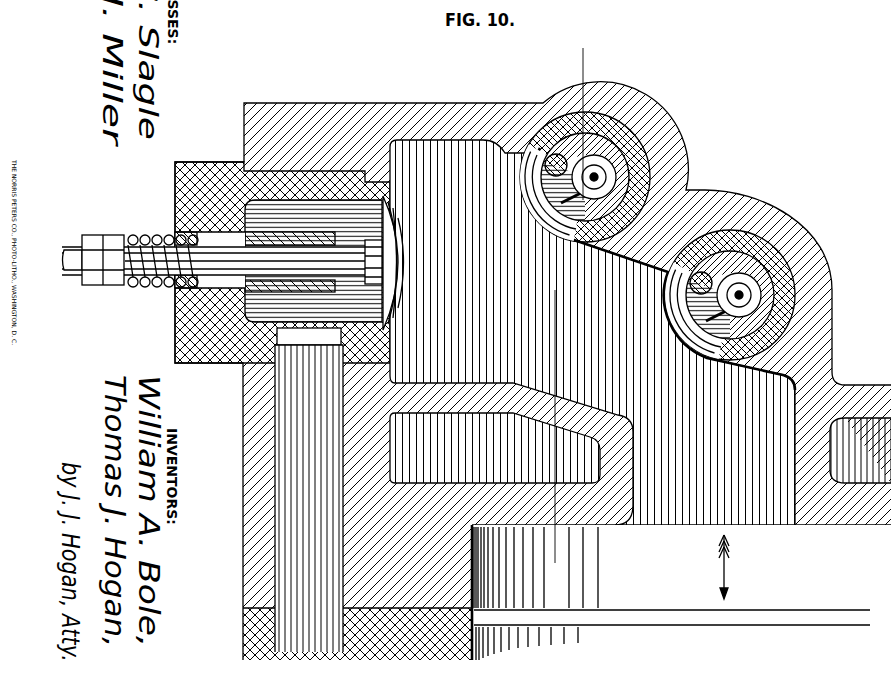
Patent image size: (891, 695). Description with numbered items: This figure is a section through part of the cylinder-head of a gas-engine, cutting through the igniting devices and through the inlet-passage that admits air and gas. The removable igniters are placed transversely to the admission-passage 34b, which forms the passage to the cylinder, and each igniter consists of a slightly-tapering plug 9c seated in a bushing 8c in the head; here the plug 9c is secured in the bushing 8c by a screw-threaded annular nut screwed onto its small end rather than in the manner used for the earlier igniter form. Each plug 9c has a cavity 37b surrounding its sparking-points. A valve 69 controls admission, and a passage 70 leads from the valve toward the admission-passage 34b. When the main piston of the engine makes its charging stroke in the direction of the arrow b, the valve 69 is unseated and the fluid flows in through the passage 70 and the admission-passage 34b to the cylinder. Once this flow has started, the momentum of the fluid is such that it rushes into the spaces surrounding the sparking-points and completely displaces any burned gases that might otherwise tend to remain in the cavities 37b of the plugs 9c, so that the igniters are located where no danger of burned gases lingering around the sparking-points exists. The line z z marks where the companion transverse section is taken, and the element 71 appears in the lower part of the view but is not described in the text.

The valve 69 is at (403, 233).
The bushing 8c is at (762, 232).
The plug 9c is at (779, 340).
The cavity 37b is at (697, 352).
The passage 34b is at (592, 332).
The passage 70 is at (309, 490).
The shaft 71 is at (681, 595).
The section line z is at (567, 307).
The arrow b is at (731, 567).